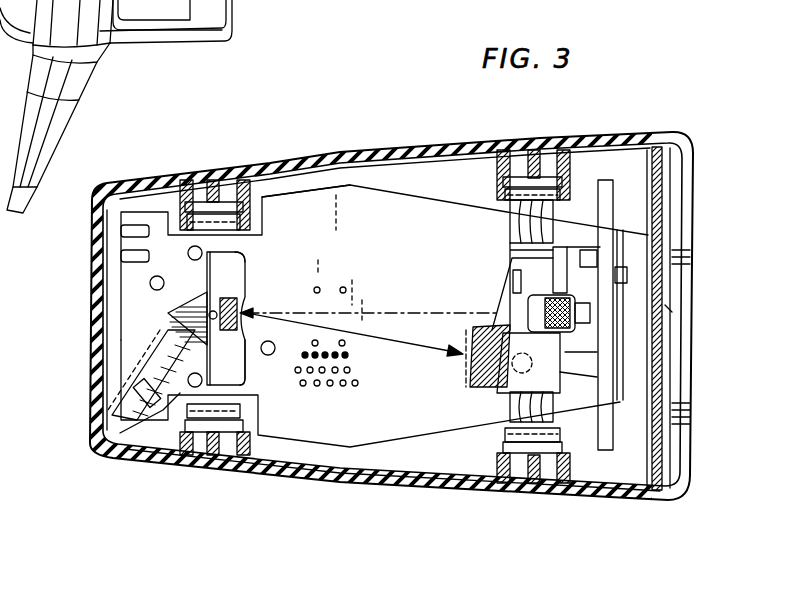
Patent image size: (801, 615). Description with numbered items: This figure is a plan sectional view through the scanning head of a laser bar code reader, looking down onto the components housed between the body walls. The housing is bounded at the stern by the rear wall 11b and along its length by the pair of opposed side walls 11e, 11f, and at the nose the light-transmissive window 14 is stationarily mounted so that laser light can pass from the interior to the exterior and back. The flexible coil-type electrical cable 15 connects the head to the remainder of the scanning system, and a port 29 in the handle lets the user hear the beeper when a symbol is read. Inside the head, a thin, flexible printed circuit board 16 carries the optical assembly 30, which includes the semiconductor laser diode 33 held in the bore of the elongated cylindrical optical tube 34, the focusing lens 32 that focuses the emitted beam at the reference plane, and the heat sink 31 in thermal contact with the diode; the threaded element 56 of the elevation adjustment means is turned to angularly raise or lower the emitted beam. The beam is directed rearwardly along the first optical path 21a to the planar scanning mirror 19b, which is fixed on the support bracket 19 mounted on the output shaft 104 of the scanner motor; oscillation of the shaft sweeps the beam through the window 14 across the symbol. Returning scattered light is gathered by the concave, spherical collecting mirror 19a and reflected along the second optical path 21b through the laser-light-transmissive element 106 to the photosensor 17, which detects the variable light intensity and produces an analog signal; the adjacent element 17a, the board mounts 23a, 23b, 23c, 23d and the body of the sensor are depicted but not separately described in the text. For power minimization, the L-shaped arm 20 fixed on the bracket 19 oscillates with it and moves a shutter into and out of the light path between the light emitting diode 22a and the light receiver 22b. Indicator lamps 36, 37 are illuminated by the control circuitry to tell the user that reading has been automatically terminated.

The rear wall 11b is at (92, 233).
The side wall 11e is at (467, 143).
The side wall 11f is at (407, 480).
The window 14 is at (655, 202).
The coil-type electrical cable 15 is at (40, 137).
The printed circuit board 16 is at (402, 265).
The photosensor 17 is at (507, 393).
The actuator base 17a is at (470, 388).
The support bracket 19 is at (207, 257).
The collecting mirror 19a is at (245, 256).
The scanning mirror 19b is at (237, 330).
The L-shaped arm 20 is at (160, 340).
The first optical path 21a is at (425, 298).
The second optical path 21b is at (412, 338).
The light emitting diode 22a is at (120, 433).
The light receiver 22b is at (135, 390).
The mounting boss 23a is at (200, 150).
The mounting boss 23b is at (573, 140).
The mounting boss 23c is at (180, 457).
The mounting boss 23d is at (553, 490).
The port 29 is at (150, 32).
The optical assembly 30 is at (577, 305).
The heat sink 31 is at (607, 200).
The focusing lens 32 is at (570, 303).
The semiconductor laser diode 33 is at (568, 353).
The optical tube 34 is at (560, 372).
The indicator lamp 36 is at (140, 230).
The indicator lamp 37 is at (123, 255).
The threaded element 56 is at (685, 297).
The output shaft 104 is at (212, 312).
The laser-light-transmissive element 106 is at (63, 290).